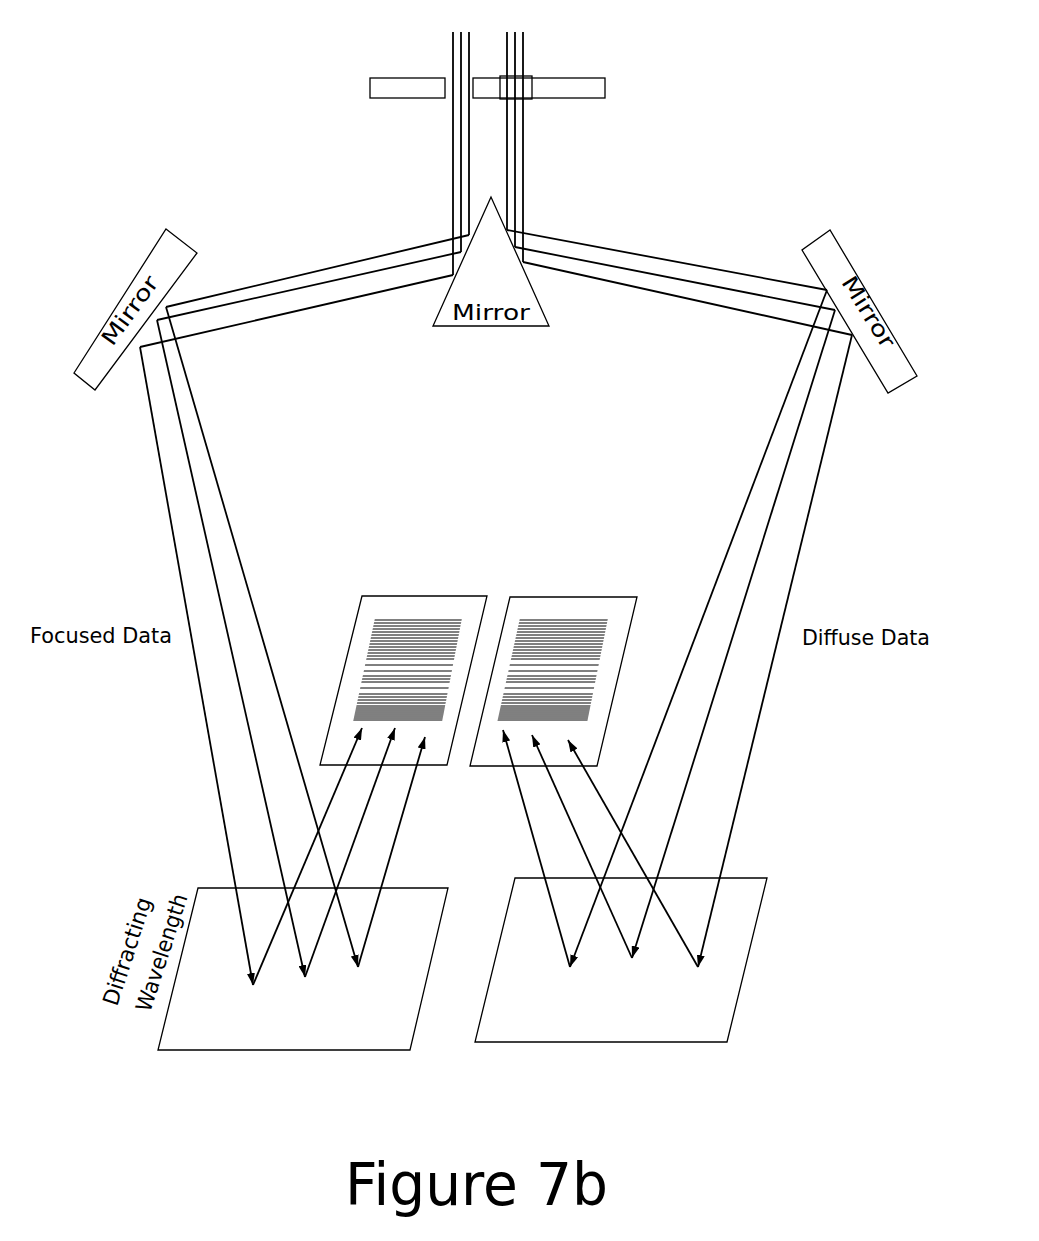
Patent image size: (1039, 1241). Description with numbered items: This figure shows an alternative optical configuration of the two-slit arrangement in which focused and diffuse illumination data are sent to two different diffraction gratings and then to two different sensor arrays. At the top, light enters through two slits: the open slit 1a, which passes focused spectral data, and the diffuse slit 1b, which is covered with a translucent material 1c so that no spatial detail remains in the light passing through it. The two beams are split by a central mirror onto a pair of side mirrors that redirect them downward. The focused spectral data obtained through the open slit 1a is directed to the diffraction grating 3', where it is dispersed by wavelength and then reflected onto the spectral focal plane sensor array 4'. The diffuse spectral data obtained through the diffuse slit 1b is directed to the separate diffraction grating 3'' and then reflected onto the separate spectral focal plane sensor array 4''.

The open slit 1a is at (440, 70).
The diffuse slit 1b is at (535, 70).
The translucent material 1c is at (535, 100).
The diffraction grating 3' is at (303, 969).
The diffraction grating 3'' is at (621, 960).
The spectral focal plane sensor array 4' is at (403, 636).
The spectral focal plane sensor array 4'' is at (556, 637).